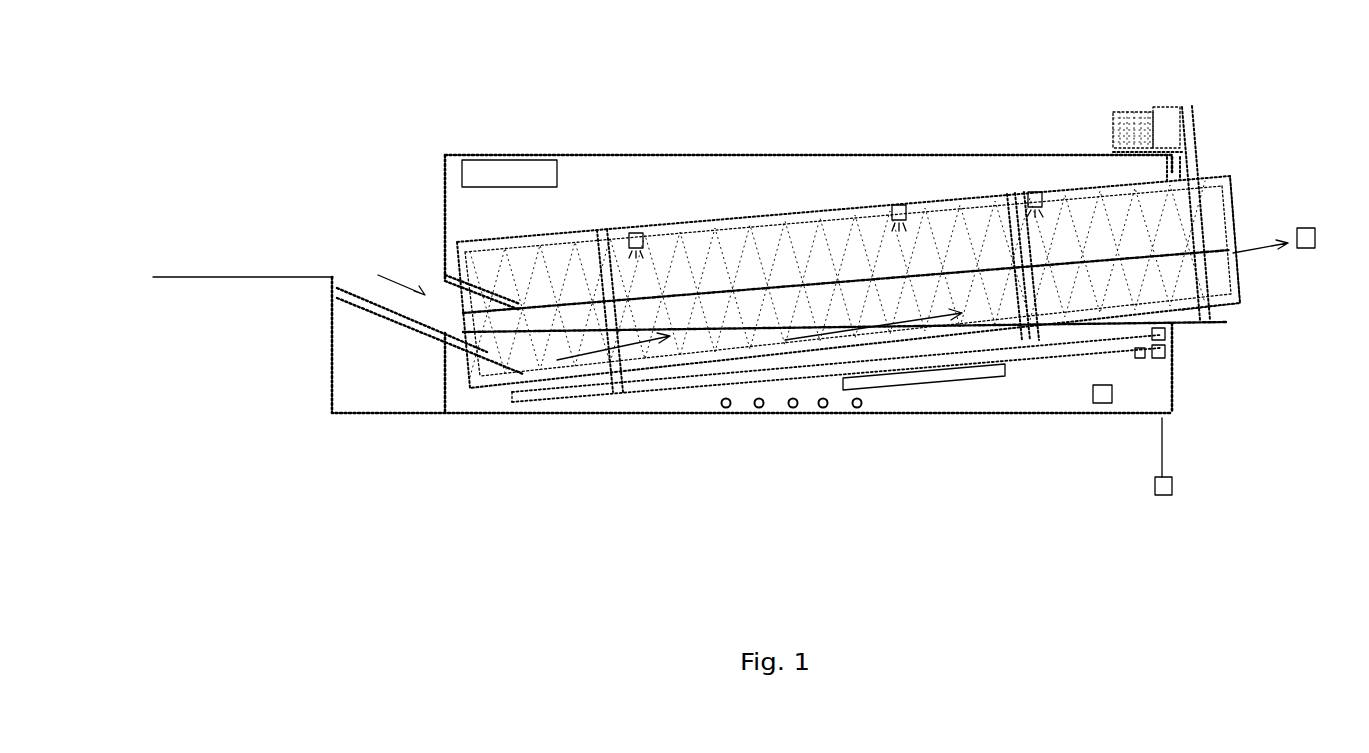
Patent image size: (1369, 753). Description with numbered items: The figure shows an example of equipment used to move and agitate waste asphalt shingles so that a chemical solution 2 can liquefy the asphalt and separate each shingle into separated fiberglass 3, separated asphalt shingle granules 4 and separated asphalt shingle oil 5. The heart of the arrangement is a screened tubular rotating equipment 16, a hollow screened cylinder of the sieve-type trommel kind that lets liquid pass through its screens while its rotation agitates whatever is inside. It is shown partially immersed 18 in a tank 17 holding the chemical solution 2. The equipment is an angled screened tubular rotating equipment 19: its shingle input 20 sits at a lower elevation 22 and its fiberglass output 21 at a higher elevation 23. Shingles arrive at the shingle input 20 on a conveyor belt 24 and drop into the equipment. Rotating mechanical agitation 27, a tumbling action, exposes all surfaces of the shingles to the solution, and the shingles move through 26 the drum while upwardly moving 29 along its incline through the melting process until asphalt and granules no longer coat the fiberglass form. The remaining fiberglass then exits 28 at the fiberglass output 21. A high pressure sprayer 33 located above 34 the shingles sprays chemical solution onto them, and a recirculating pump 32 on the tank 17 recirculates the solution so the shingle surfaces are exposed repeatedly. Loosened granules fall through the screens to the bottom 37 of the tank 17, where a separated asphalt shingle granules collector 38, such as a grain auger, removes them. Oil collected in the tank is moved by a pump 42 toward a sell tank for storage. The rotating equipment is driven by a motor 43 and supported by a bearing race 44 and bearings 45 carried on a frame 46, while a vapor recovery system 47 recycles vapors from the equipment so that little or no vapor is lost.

The chemical solution 2 is at (1125, 388).
The separated fiberglass 3 is at (1312, 228).
The separated asphalt shingle granules 4 is at (726, 408).
The separated asphalt shingle oil 5 is at (1165, 352).
The screened tubular rotating equipment 16 is at (958, 200).
The tank 17 is at (970, 417).
The partially immersed 18 is at (484, 352).
The angled screened tubular rotating equipment 19 is at (828, 212).
The shingle input 20 is at (372, 300).
The fiberglass output 21 is at (1240, 288).
The lower elevation 22 is at (498, 378).
The higher elevation 23 is at (1182, 310).
The conveyor belt 24 is at (185, 277).
The move through 26 is at (870, 327).
The rotating mechanical agitation 27 is at (877, 230).
The exit 28 is at (1263, 247).
The upwardly moving 29 is at (900, 322).
The recirculating pump 32 is at (1102, 403).
The high pressure sprayer 33 is at (1030, 190).
The above 34 is at (1057, 188).
The bottom 37 is at (1173, 410).
The separated asphalt shingle granules collector 38 is at (950, 373).
The pump 42 is at (1170, 487).
The motor 43 is at (1160, 112).
The bearing race 44 is at (599, 228).
The bearings 45 is at (1022, 343).
The frame 46 is at (588, 397).
The vapor recovery system 47 is at (513, 172).